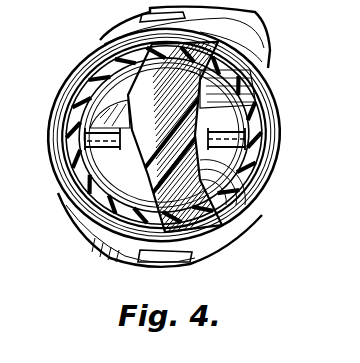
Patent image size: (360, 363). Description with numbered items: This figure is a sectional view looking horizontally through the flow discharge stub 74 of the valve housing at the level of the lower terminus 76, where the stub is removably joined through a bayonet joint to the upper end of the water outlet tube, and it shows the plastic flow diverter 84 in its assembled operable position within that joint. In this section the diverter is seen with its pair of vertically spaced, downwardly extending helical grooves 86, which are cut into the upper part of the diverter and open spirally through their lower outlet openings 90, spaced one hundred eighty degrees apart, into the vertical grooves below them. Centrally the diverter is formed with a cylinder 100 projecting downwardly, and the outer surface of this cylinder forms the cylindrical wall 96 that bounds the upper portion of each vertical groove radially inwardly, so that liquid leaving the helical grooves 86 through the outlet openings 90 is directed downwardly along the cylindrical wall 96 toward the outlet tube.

The flow discharge stub 74 is at (223, 60).
The lower terminus 76 is at (272, 100).
The flow diverter 84 is at (130, 113).
The helical grooves 86 is at (82, 132).
The lower outlet openings 90 is at (98, 130).
The cylindrical wall 96 is at (112, 102).
The cylinder 100 is at (232, 216).